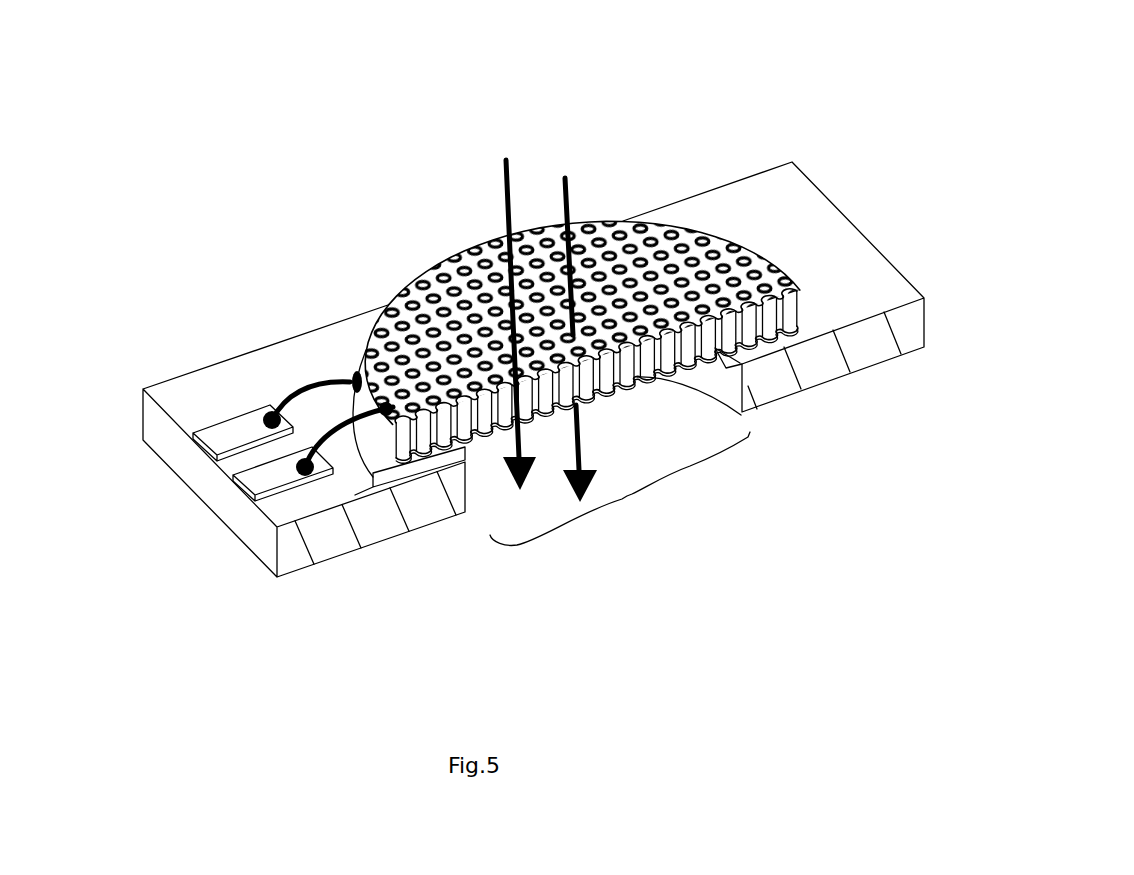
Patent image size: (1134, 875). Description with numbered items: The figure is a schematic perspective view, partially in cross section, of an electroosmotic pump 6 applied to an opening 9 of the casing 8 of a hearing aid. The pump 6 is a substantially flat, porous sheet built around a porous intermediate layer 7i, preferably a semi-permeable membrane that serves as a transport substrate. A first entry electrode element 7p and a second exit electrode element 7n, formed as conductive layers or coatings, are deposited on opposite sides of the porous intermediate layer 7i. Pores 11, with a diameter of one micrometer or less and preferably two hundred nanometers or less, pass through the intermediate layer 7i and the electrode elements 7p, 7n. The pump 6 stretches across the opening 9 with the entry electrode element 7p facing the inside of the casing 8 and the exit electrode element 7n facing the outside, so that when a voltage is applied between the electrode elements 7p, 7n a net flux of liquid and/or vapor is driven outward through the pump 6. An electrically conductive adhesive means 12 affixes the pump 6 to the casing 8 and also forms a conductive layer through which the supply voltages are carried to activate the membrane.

The electroosmotic pump 6 is at (369, 86).
The first entry electrode element 7p is at (797, 287).
The porous intermediate layer 7i is at (797, 333).
The second exit electrode element 7n is at (740, 367).
The casing 8 is at (302, 547).
The opening 9 is at (620, 488).
The pores 11 is at (653, 276).
The electrically conductive adhesive means 12 is at (437, 458).